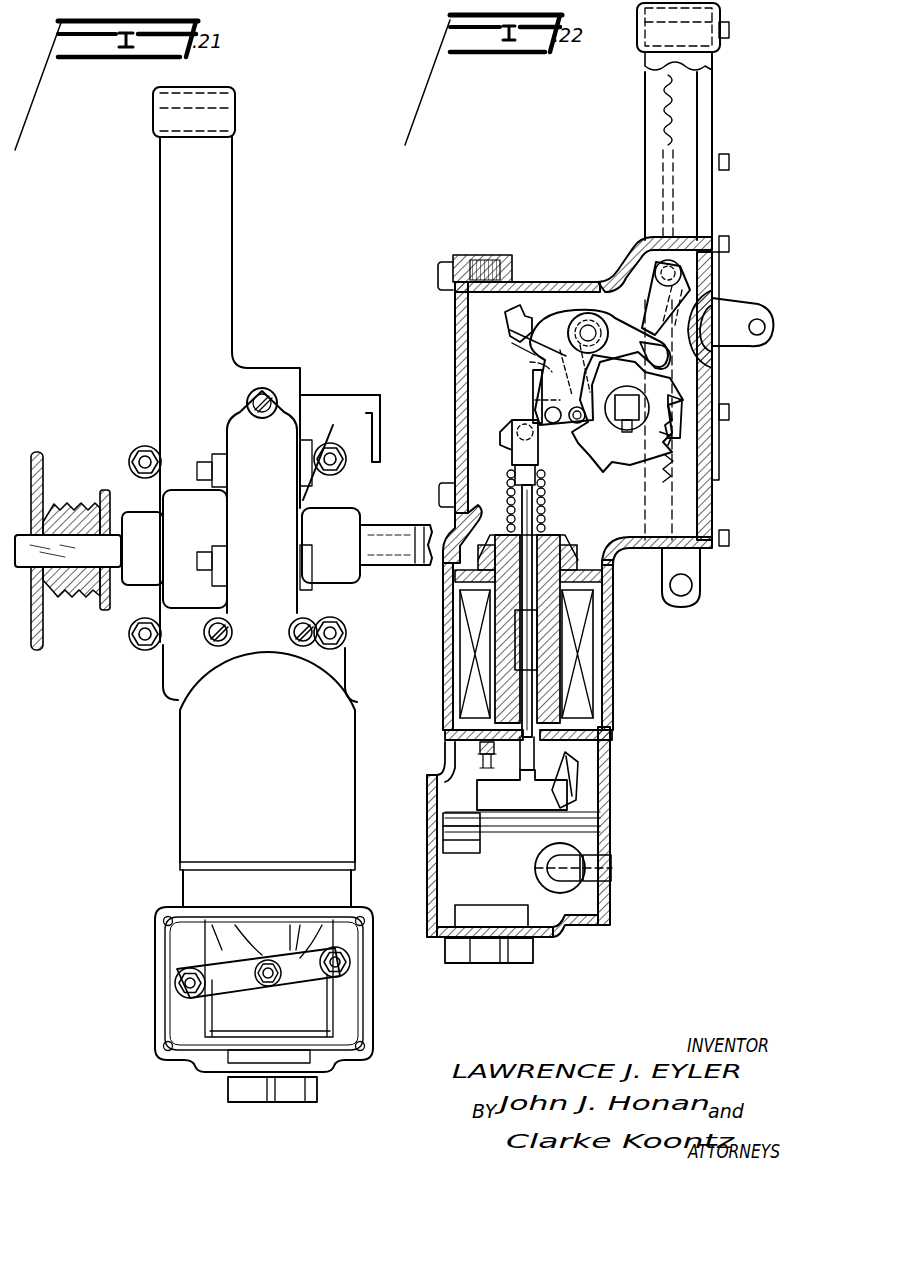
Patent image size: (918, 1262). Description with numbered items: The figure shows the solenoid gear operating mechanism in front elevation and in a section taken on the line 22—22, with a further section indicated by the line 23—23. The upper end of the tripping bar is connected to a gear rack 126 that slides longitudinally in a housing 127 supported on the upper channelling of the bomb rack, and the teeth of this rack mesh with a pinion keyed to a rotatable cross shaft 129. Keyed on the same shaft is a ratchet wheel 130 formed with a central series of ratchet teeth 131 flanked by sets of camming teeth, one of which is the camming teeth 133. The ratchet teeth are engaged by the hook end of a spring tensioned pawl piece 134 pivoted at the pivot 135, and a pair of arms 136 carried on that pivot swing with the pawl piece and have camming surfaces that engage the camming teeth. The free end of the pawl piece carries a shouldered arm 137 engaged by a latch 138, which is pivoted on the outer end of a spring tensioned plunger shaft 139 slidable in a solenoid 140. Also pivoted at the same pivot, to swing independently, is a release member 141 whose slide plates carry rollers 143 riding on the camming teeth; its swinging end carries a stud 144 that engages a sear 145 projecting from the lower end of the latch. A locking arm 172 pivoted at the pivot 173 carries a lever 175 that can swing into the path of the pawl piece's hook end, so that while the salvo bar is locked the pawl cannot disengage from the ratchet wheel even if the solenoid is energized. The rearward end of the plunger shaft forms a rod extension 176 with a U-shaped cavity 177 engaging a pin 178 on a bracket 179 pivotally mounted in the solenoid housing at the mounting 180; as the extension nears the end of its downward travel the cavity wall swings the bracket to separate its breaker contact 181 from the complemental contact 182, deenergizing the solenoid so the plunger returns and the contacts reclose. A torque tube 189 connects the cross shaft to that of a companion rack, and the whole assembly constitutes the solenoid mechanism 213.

In FIG. 21, the section line 22— 22 is at (262, 458).
In FIG. 22, the section line 23— 23 is at (530, 258).
In FIG. 22, the gear rack 126 is at (697, 586).
In FIG. 21, the housing 127 is at (172, 204).
In FIG. 22, the housing 127 is at (707, 458).
In FIG. 21, the cross shaft 129 is at (80, 545).
In FIG. 22, the cross shaft 129 is at (646, 398).
In FIG. 22, the ratchet wheel 130 is at (660, 376).
In FIG. 22, the ratchet teeth 131 is at (665, 408).
In FIG. 22, the camming teeth 133 is at (668, 436).
In FIG. 22, the pawl piece 134 is at (642, 322).
In FIG. 22, the pivot 135 is at (598, 314).
In FIG. 22, the arms 136 is at (535, 382).
In FIG. 22, the shouldered arm 137 is at (525, 336).
In FIG. 22, the latch 138 is at (513, 312).
In FIG. 22, the plunger shaft 139 is at (532, 500).
In FIG. 22, the solenoid 140 is at (585, 645).
In FIG. 22, the release member 141 is at (530, 354).
In FIG. 22, the rollers 143 is at (577, 456).
In FIG. 22, the stud 144 is at (540, 408).
In FIG. 22, the sear 145 is at (535, 371).
In FIG. 21, the locking arm 172 is at (381, 434).
In FIG. 22, the locking arm 172 is at (735, 298).
In FIG. 21, the pivot 173 is at (325, 396).
In FIG. 22, the pivot 173 is at (700, 268).
In FIG. 22, the lever 175 is at (660, 322).
In FIG. 22, the rod extension 176 is at (535, 700).
In FIG. 22, the U-shaped cavity 177 is at (565, 752).
In FIG. 22, the pin 178 is at (528, 768).
In FIG. 22, the bracket 179 is at (550, 800).
In FIG. 22, the pivotal mounting 180 is at (580, 778).
In FIG. 22, the breaker contact 181 is at (432, 770).
In FIG. 22, the complemental contact 182 is at (480, 748).
In FIG. 21, the torque tube 189 is at (386, 527).
In FIG. 21, the solenoid mechanism 213 is at (192, 805).
In FIG. 22, the solenoid mechanism 213 is at (440, 650).